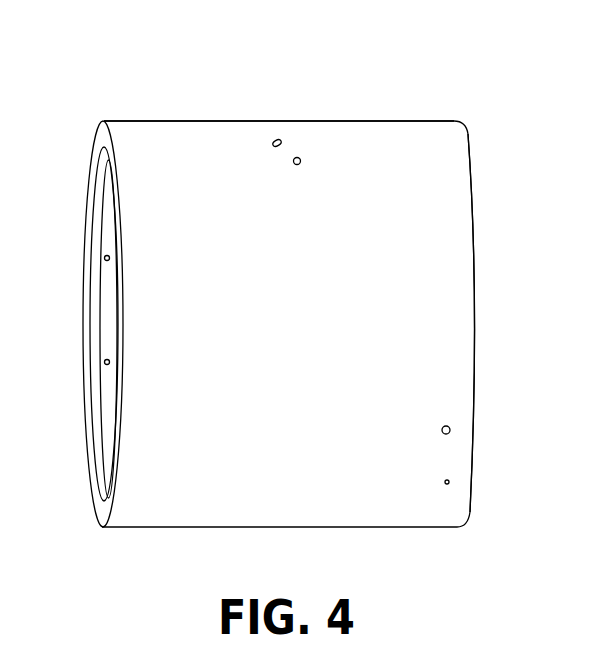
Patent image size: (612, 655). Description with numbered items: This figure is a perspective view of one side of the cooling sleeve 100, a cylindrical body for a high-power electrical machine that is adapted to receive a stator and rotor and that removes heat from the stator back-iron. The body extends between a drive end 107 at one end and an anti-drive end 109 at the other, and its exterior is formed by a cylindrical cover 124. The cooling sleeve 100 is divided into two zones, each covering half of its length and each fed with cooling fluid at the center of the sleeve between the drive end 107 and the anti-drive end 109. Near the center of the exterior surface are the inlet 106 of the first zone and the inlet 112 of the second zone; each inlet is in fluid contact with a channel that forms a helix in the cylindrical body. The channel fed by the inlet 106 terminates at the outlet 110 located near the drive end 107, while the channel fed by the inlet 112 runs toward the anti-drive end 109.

The cooling sleeve 100 is at (380, 63).
The inlet 106 is at (302, 163).
The drive end 107 is at (487, 219).
The anti-drive end 109 is at (87, 322).
The outlet 110 is at (452, 432).
The inlet 112 is at (277, 139).
The cylindrical cover 124 is at (185, 140).